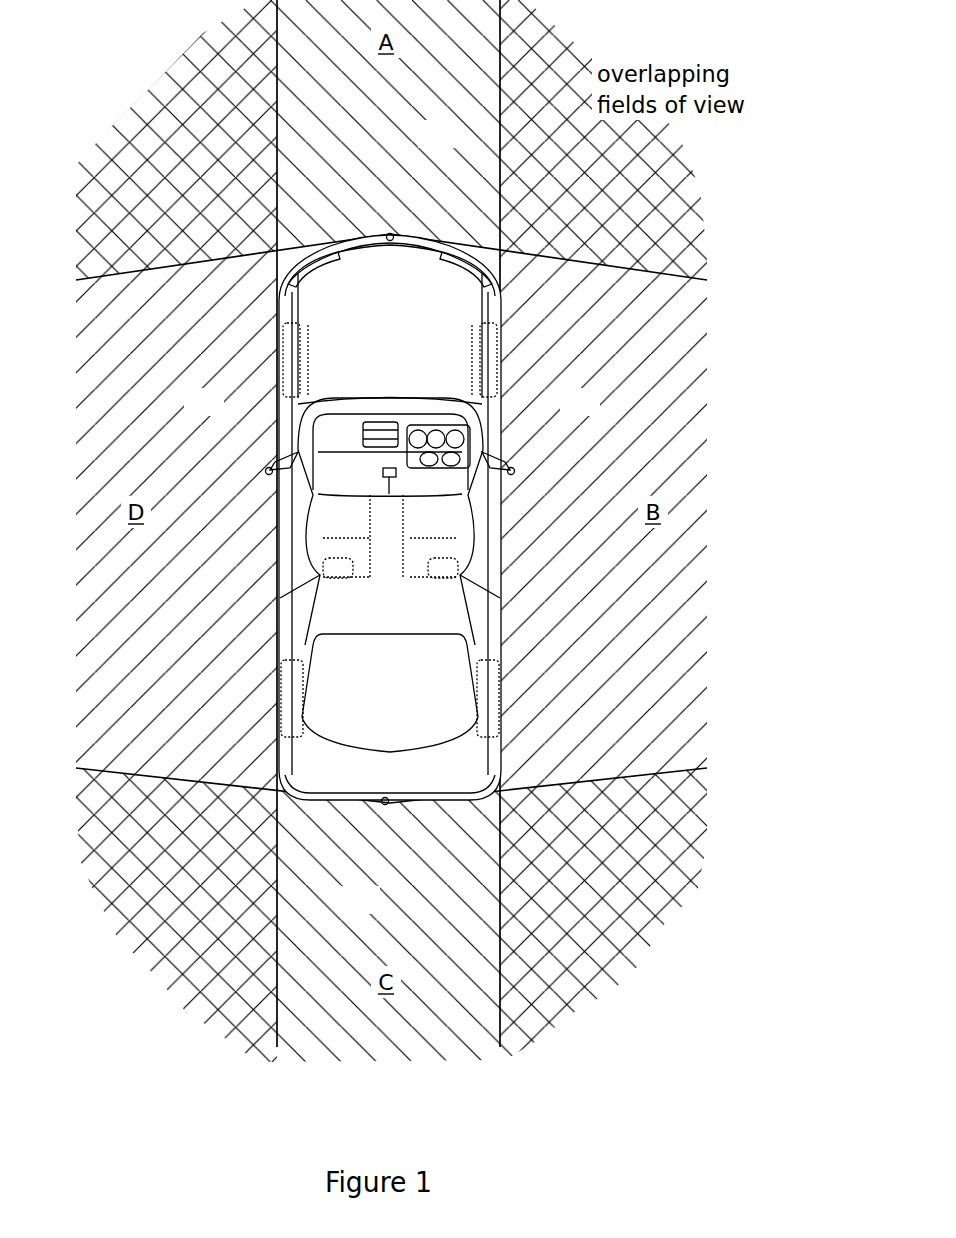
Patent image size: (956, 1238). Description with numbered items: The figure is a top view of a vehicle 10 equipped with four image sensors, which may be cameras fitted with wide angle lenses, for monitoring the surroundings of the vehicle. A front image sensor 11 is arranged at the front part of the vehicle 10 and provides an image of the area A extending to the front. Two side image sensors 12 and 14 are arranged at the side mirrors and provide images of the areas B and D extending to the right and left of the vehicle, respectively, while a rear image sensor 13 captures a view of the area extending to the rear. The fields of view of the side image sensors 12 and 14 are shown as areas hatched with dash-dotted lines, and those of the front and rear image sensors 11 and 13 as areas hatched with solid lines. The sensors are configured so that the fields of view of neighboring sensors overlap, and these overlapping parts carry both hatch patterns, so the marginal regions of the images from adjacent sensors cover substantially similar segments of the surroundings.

The vehicle 10 is at (381, 618).
The front image sensor 11 is at (392, 231).
The side image sensor 12 is at (513, 471).
The rear image sensor 13 is at (385, 805).
The side image sensor 14 is at (267, 471).